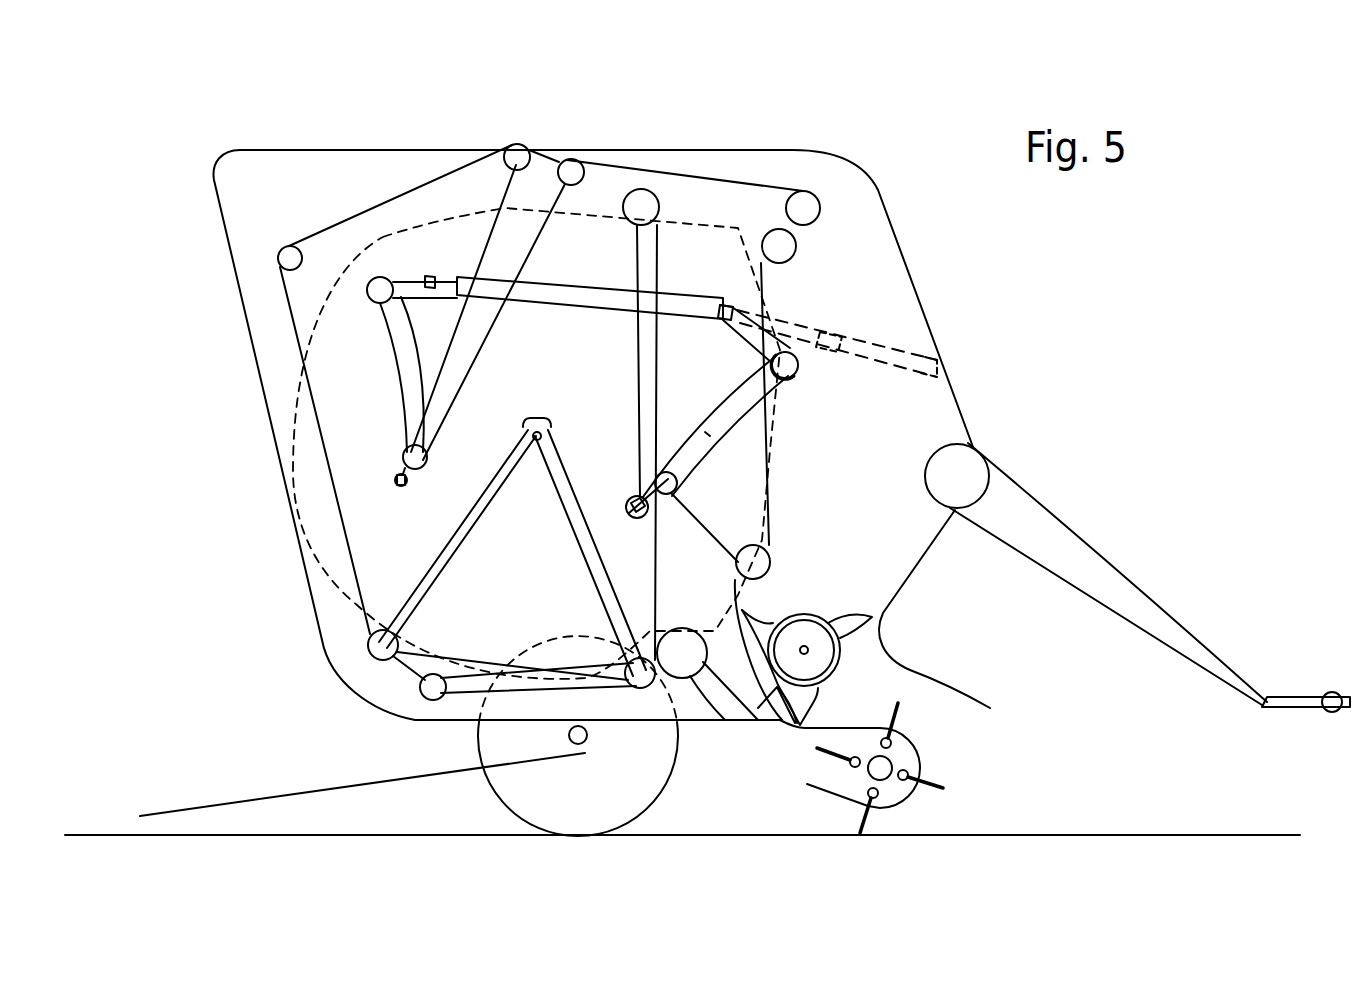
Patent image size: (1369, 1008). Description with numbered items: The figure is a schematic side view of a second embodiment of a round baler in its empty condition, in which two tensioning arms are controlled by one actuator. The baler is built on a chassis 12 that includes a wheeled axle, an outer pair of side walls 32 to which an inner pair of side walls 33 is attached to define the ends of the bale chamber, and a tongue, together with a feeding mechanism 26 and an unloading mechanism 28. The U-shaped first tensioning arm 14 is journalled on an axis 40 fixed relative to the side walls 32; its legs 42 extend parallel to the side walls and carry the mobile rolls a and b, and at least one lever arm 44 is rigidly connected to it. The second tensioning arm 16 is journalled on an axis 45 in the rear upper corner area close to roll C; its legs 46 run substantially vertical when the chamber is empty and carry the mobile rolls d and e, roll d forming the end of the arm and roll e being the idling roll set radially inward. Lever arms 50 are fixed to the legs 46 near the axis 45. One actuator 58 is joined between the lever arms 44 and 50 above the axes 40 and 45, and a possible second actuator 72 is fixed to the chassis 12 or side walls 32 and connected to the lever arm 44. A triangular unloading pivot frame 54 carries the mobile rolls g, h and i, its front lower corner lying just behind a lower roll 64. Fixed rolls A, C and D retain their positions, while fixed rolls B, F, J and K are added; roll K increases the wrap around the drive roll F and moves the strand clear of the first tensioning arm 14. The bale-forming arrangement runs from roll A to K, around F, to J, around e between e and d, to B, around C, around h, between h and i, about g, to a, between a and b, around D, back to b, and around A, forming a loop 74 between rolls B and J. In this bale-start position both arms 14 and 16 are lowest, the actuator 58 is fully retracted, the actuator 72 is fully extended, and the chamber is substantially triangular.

The chassis 12 is at (878, 183).
The first tensioning arm 14 is at (712, 437).
The second tensioning arm 16 is at (380, 371).
The feeding mechanism 26 is at (965, 720).
The unloading mechanism 28 is at (245, 797).
The outer pair of side walls 32 is at (898, 486).
The inner pair of side walls 33 is at (357, 287).
The axis 40 is at (797, 373).
The legs 42 is at (735, 430).
The lever arm 44 is at (750, 337).
The axis 45 is at (378, 277).
The legs 46 is at (408, 398).
The lever arms 50 is at (410, 285).
The unloading pivot frame 54 is at (462, 540).
The actuator 58 is at (557, 297).
The lower roll 64 is at (693, 660).
The second actuator 72 is at (900, 345).
The loop 74 is at (458, 340).
The fixed roll A is at (770, 560).
The fixed roll B is at (508, 148).
The fixed roll C is at (279, 262).
The fixed roll D is at (644, 205).
The drive roll F is at (806, 206).
The fixed roll J is at (574, 172).
The fixed roll K is at (800, 258).
The mobile roll a is at (633, 519).
The mobile roll b is at (677, 486).
The mobile roll d is at (404, 488).
The mobile roll e is at (428, 462).
The mobile roll g is at (640, 690).
The mobile roll h is at (375, 660).
The mobile roll i is at (430, 700).